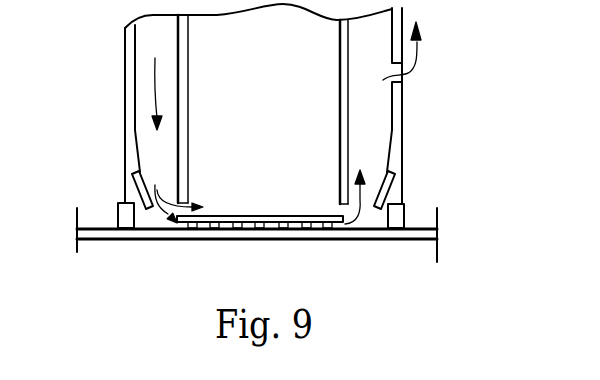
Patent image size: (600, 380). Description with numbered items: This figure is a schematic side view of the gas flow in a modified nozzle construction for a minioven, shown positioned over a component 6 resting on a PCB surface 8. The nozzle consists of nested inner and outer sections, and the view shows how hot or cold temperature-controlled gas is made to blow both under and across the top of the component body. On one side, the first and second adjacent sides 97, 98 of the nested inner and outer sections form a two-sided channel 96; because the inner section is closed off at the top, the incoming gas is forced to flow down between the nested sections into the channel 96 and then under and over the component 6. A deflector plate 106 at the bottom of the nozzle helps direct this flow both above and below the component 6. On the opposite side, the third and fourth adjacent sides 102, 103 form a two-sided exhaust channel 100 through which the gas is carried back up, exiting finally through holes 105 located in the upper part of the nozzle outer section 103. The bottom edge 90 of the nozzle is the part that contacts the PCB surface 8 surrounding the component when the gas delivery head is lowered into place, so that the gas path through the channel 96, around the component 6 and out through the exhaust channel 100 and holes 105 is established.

The component 6 is at (301, 222).
The PCB surface 8 is at (418, 240).
The bottom edge 90 is at (404, 220).
The 2-sided channel 96 is at (146, 95).
The first adjacent side 97 is at (182, 58).
The second adjacent side 98 is at (128, 67).
The 2-sided exhaust channel 100 is at (403, 130).
The third adjacent side 102 is at (341, 120).
The fourth adjacent side (nozzle outer section) 103 is at (404, 104).
The holes 105 is at (402, 79).
The deflector plate 106 is at (148, 178).